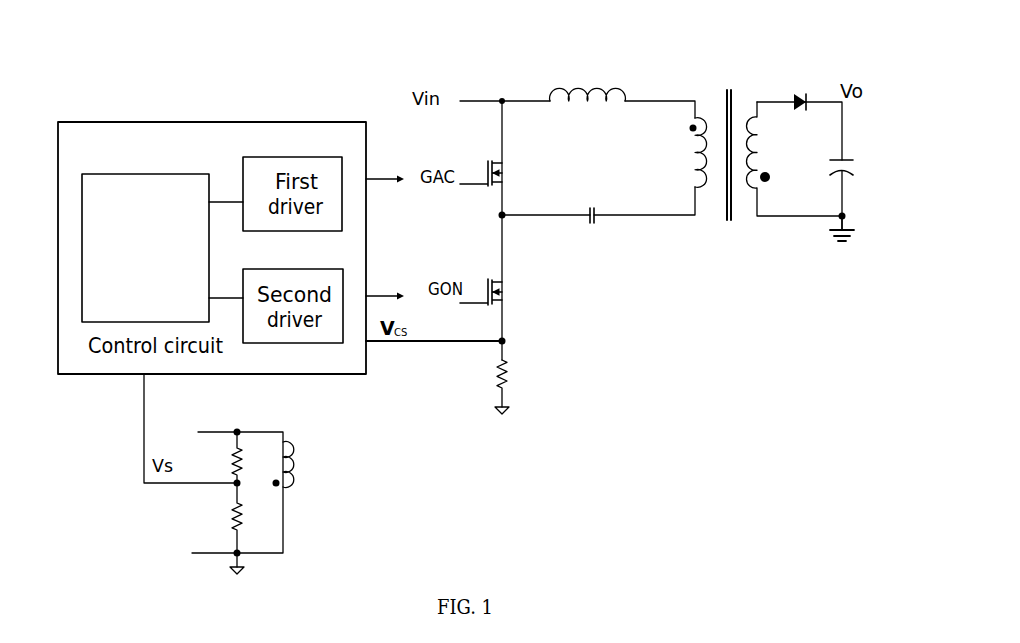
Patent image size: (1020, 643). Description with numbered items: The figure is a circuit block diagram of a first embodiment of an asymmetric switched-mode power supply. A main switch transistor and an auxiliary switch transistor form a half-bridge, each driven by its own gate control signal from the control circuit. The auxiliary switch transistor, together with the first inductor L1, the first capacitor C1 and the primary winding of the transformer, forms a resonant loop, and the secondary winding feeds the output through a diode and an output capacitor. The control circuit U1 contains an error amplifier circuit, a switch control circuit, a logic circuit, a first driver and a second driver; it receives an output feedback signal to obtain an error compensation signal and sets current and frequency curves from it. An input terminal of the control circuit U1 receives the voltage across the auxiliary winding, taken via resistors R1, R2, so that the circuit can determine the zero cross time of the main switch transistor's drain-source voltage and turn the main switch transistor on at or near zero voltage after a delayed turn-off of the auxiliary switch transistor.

The control circuit U1 is at (145, 248).
The inductor L1 is at (588, 84).
The capacitor C1 is at (595, 204).
The first resistor R1 is at (224, 457).
The second resistor R2 is at (224, 518).